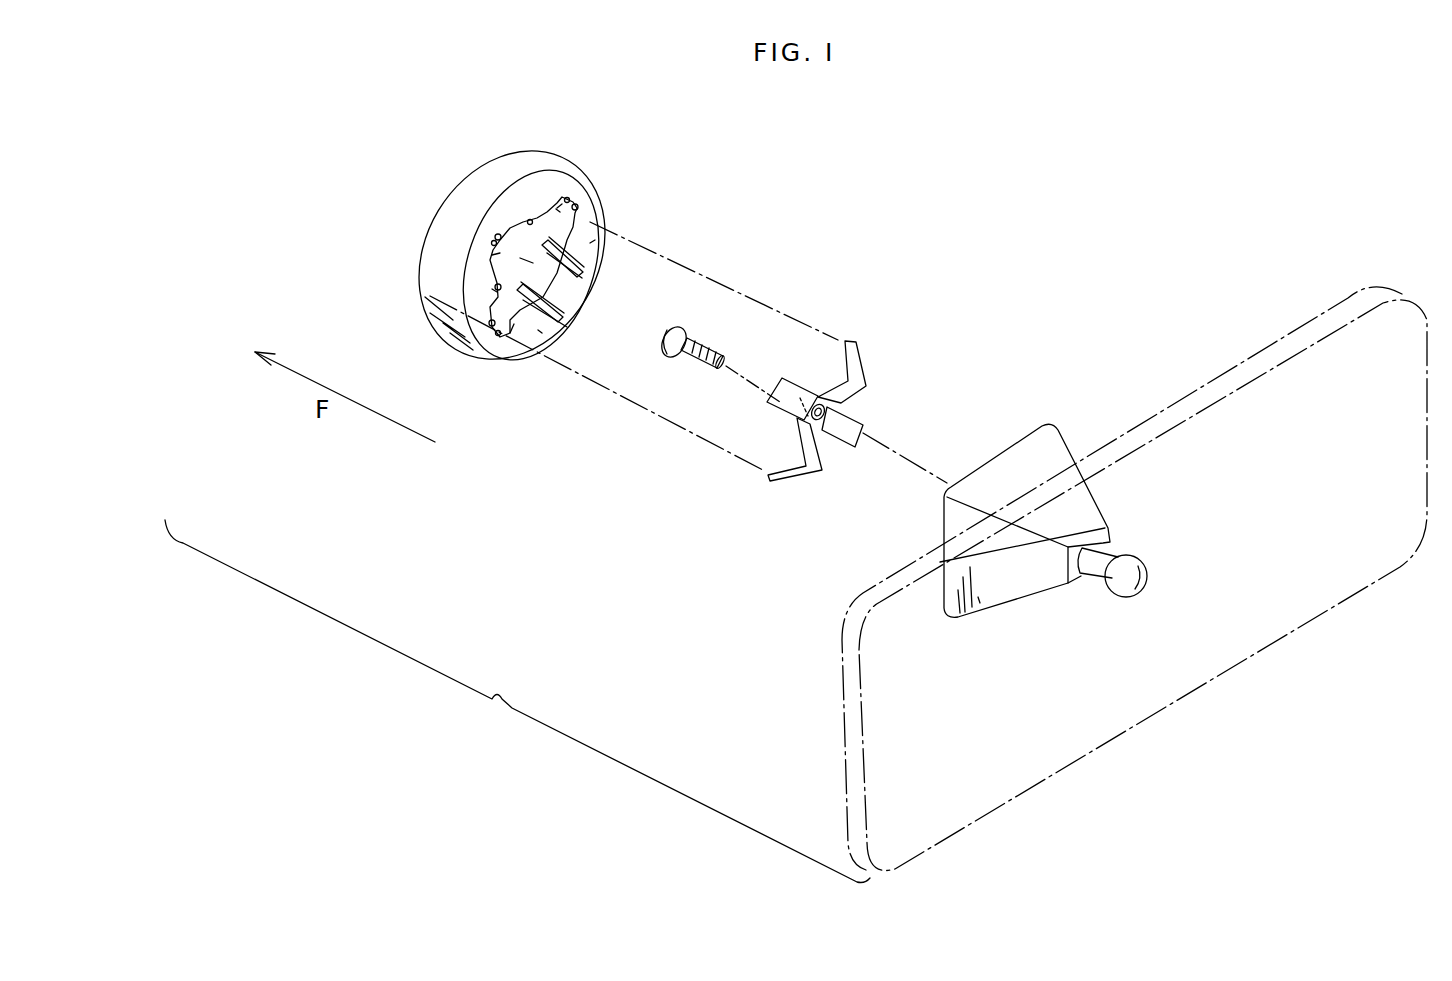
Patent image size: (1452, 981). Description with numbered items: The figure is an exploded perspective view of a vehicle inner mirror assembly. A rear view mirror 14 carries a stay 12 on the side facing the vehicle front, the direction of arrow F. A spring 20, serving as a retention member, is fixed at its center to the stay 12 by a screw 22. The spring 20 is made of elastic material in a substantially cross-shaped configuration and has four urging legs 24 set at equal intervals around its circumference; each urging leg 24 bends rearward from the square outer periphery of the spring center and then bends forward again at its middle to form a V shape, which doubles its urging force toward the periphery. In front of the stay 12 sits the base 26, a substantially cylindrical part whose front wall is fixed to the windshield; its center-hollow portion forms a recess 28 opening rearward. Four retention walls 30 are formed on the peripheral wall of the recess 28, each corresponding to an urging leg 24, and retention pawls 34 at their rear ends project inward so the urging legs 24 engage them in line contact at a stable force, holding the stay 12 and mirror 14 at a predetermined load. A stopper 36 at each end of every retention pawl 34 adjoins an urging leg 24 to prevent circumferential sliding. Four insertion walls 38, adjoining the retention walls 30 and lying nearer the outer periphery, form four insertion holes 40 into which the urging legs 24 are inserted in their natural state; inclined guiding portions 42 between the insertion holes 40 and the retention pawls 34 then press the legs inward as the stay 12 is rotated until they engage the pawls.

The stay 12 is at (1064, 436).
The rear view mirror 14 is at (1213, 348).
The spring 20 is at (844, 400).
The screw 22 is at (680, 332).
The urging legs 24 is at (790, 392).
The base 26 is at (539, 229).
The recess 28 is at (558, 284).
The retention walls 30 is at (562, 240).
The retention pawls 34 is at (557, 210).
The stopper 36 is at (580, 264).
The insertion walls 38 is at (567, 197).
The insertion holes 40 is at (557, 205).
The inclined guiding portions 42 is at (577, 205).